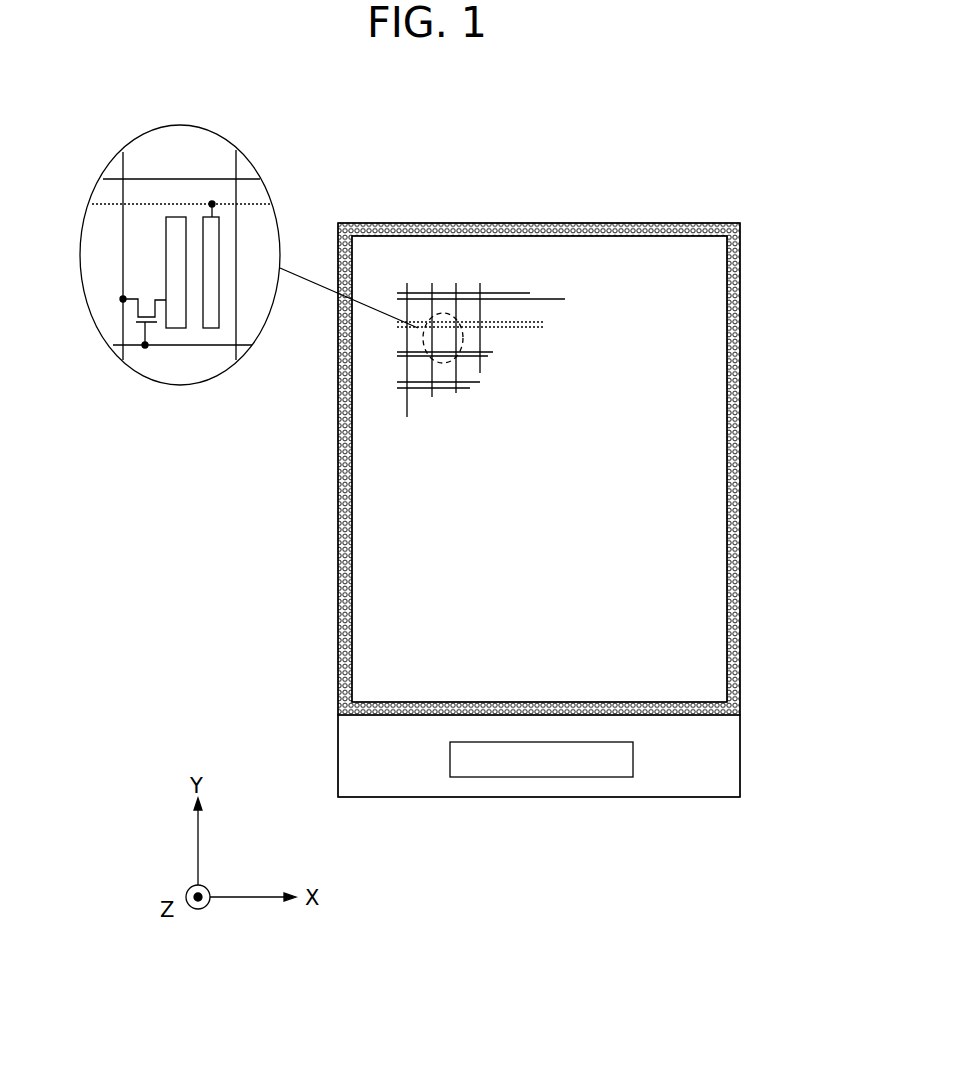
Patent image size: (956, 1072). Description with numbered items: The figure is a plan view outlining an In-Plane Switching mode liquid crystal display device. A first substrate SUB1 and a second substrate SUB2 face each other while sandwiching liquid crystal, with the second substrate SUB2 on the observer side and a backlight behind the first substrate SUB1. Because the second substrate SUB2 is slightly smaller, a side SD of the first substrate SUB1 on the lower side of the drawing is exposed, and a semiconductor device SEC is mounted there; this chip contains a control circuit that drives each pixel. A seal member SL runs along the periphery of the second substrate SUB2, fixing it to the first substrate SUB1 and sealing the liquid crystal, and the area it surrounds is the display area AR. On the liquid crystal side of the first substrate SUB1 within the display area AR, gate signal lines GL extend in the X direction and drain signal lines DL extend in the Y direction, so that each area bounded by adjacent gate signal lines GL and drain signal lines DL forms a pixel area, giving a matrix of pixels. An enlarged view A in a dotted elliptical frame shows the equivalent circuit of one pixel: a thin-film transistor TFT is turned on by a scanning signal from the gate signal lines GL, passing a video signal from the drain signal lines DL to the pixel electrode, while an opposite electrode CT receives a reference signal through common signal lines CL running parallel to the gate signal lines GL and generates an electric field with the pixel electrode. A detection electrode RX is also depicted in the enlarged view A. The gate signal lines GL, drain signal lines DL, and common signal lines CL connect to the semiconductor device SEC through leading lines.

The first substrate SUB1 is at (388, 797).
The second substrate SUB2 is at (602, 223).
The seal member SL is at (732, 542).
The display area AR is at (539, 469).
The side of the first substrate SD is at (378, 750).
The semiconductor device SEC is at (540, 777).
The drain signal lines DL is at (407, 407).
The gate signal lines GL is at (493, 293).
The common signal lines CL is at (548, 299).
The enlarged view A is at (271, 244).
The detection electrode RX is at (168, 255).
The opposite electrode CT is at (220, 262).
The thin-film transistor TFT is at (132, 325).